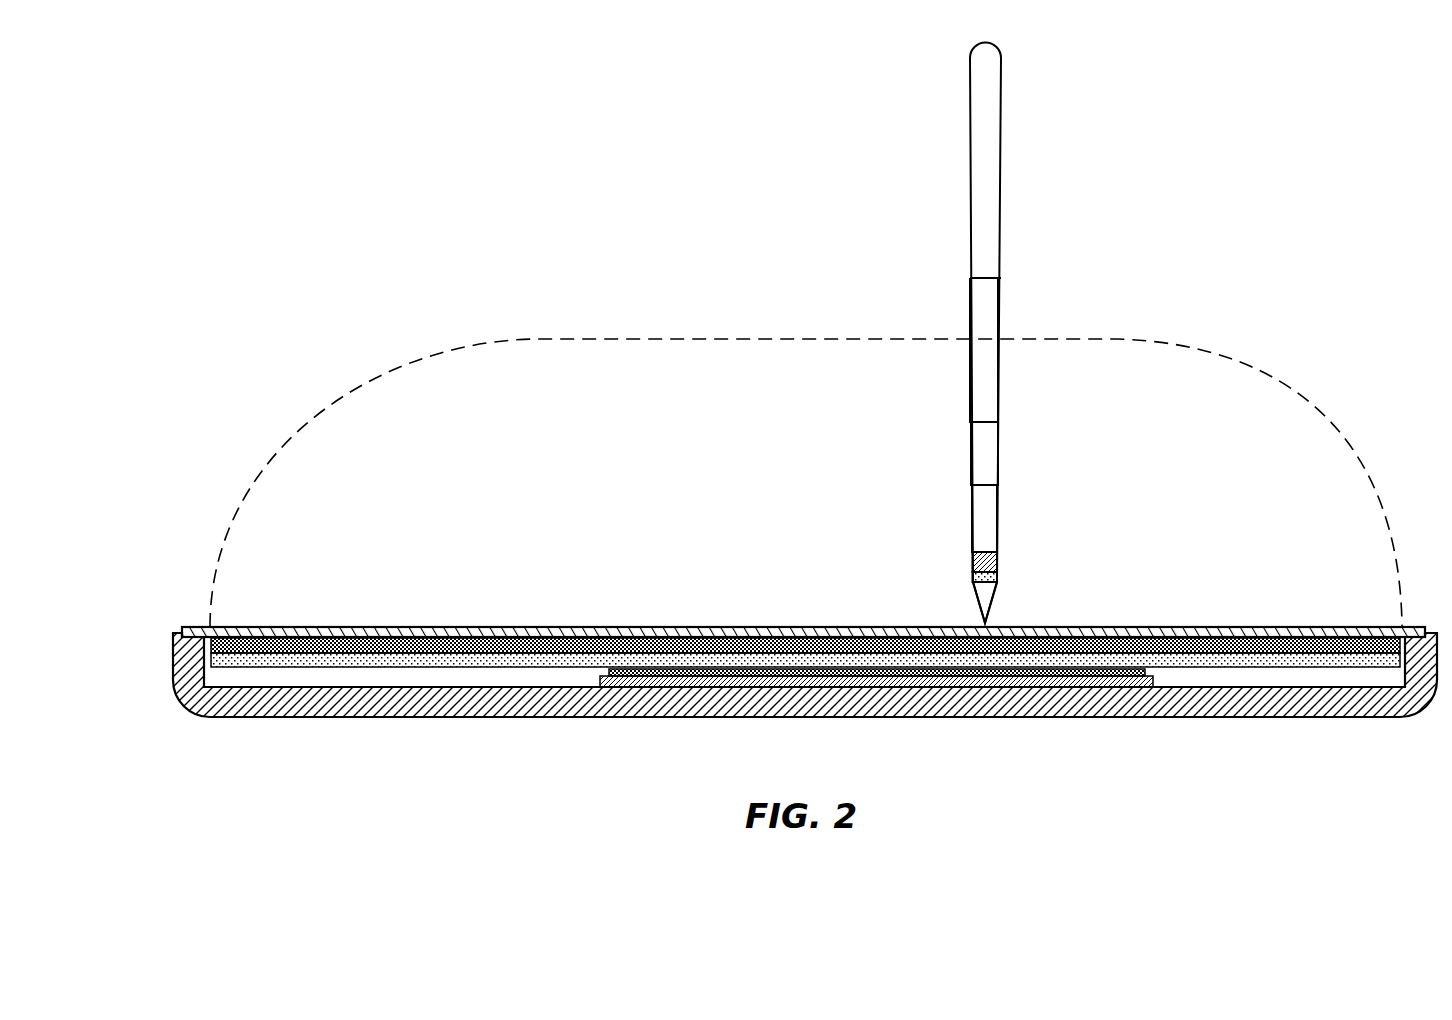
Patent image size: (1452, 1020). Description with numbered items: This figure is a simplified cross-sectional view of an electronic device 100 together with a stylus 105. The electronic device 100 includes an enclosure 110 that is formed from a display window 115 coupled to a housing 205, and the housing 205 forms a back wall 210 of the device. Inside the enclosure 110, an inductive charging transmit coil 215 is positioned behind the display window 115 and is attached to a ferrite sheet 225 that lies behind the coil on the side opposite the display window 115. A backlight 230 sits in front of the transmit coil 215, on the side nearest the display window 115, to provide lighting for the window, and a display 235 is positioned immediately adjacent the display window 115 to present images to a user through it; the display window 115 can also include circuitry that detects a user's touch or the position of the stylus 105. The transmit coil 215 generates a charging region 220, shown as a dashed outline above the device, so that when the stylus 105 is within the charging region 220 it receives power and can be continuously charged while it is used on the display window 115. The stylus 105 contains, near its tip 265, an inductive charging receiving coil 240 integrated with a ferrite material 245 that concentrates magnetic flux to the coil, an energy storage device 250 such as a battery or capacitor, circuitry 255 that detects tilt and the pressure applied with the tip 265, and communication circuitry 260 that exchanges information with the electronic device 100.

The electronic device 100 is at (421, 522).
The stylus 105 is at (991, 117).
The enclosure 110 is at (190, 688).
The display window 115 is at (278, 630).
The housing 205 is at (248, 703).
The back wall 210 is at (612, 700).
The inductive charging transmit coil 215 is at (747, 672).
The charging region 220 is at (567, 338).
The ferrite sheet 225 is at (872, 680).
The backlight 230 is at (385, 660).
The display 235 is at (313, 650).
The inductive charging receiving coil 240 is at (990, 581).
The ferrite material 245 is at (995, 562).
The energy storage device 250 is at (990, 506).
The circuitry 255 is at (988, 457).
The communication circuitry 260 is at (988, 388).
The tip 265 is at (988, 622).